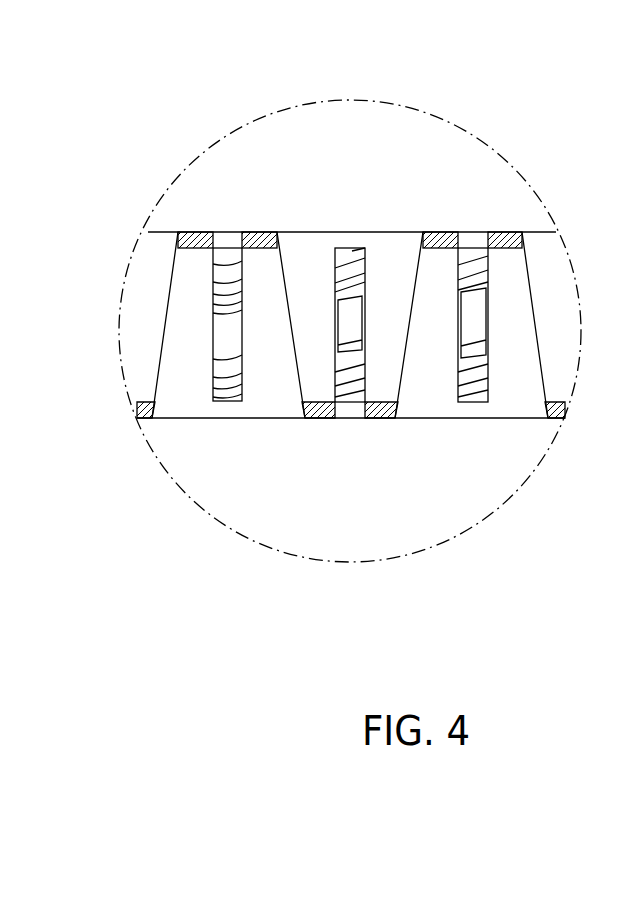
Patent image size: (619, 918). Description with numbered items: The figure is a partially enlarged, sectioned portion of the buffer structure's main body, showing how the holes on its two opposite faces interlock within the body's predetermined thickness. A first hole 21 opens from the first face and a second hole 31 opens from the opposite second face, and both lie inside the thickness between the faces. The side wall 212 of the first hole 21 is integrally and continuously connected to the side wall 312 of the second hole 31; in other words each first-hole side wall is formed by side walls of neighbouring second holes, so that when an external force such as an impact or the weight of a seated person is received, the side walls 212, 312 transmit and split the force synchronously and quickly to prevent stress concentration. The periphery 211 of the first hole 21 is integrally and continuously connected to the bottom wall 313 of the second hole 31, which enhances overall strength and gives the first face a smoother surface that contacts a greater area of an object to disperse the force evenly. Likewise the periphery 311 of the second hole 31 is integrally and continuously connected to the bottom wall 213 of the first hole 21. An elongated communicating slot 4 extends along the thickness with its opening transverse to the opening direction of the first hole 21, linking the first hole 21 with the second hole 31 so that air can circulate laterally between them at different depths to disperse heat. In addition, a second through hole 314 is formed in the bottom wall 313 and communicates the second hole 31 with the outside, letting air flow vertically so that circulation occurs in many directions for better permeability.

The first hole 21 is at (391, 208).
The periphery of first hole 211 is at (420, 232).
The side wall of first hole 212 is at (293, 277).
The bottom wall of first hole 213 is at (399, 393).
The second hole 31 is at (287, 442).
The periphery of second hole 311 is at (155, 412).
The side wall of second hole 312 is at (188, 324).
The bottom wall of second hole 313 is at (202, 250).
The second through hole 314 is at (230, 208).
The communicating slot 4 is at (485, 401).